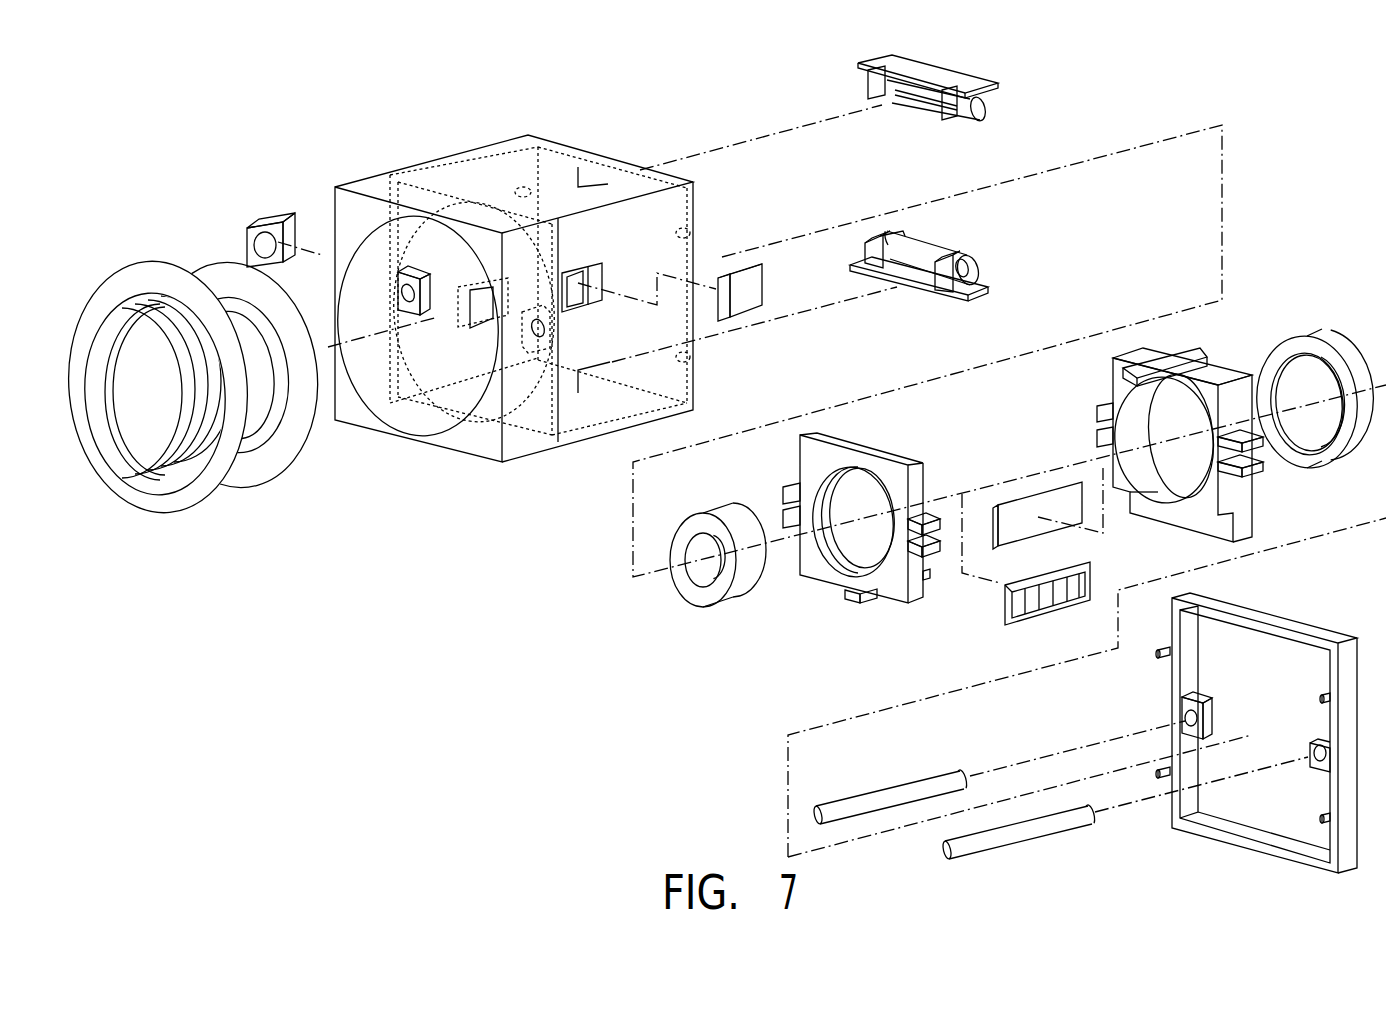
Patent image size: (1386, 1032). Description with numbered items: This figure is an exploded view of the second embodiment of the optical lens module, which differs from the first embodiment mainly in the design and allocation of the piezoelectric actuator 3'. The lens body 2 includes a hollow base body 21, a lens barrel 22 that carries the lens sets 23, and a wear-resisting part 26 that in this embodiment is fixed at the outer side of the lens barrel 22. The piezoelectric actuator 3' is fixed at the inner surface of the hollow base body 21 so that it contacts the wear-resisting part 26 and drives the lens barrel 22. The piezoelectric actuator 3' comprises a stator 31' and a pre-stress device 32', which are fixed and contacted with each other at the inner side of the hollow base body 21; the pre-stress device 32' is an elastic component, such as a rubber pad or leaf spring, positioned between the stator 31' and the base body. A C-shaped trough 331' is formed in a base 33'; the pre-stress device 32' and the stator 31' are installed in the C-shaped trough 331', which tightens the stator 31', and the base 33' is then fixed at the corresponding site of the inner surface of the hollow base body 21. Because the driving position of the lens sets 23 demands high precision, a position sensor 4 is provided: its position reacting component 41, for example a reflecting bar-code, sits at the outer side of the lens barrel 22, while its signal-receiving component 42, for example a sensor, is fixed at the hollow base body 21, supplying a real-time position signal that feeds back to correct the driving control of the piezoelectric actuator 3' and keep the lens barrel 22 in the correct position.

The lens body 2 is at (535, 643).
The hollow base body 21 is at (577, 432).
The lens barrel 22 is at (897, 588).
The lens set 23 is at (743, 593).
The wear-resisting part 26 is at (1187, 357).
The piezoelectric actuator 3' is at (1000, 272).
The stator 31' is at (995, 248).
The pre-stress device 32' is at (987, 273).
The base 33' is at (980, 300).
The C-shaped trough 331' is at (1001, 239).
The position sensor 4 is at (998, 393).
The position reacting component 41 is at (1010, 588).
The signal-receiving component 42 is at (748, 302).